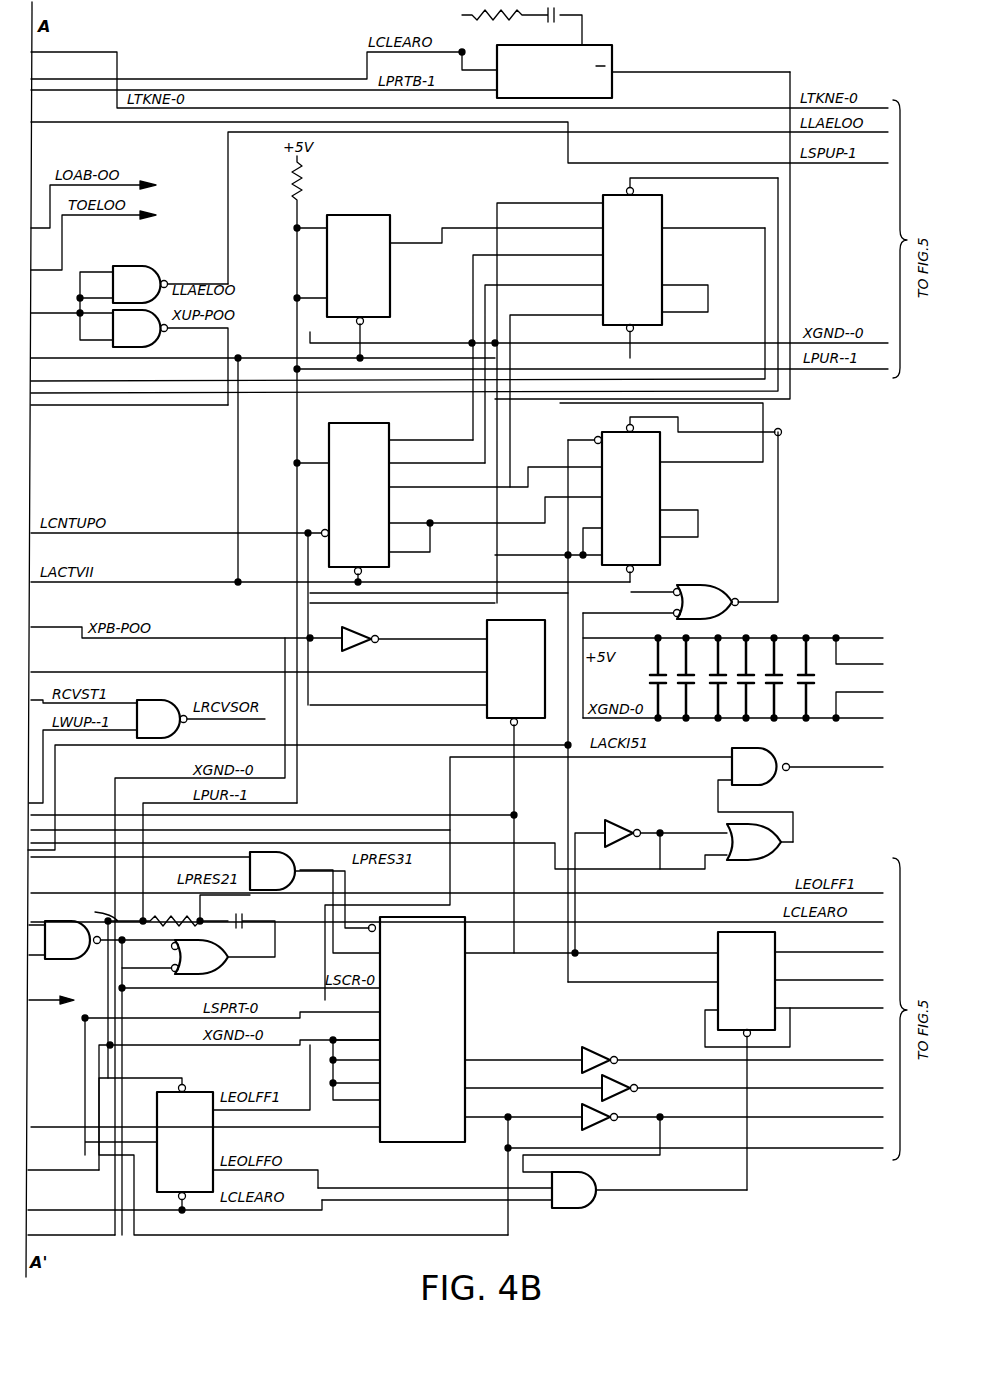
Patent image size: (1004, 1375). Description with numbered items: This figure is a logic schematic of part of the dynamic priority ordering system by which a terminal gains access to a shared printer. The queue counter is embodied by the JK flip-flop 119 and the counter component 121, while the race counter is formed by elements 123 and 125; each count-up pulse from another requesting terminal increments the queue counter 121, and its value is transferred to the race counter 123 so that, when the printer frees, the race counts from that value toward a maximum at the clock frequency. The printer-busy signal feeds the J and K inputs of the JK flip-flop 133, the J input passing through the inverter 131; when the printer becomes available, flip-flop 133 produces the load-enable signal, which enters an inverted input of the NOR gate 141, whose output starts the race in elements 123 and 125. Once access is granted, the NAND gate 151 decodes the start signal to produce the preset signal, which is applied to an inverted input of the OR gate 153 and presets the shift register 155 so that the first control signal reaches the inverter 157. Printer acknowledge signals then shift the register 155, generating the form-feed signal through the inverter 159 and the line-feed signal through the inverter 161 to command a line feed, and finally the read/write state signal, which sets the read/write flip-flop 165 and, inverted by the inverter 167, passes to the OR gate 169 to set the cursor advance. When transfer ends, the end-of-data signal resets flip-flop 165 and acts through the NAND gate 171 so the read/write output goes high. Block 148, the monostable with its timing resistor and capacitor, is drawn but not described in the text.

The JK flip-flop 119 is at (392, 298).
The queue counter component 121 is at (336, 422).
The race counter element 123 is at (662, 555).
The race counter element 125 is at (665, 316).
The inverter 131 is at (345, 628).
The JK flip-flop 133 is at (548, 622).
The NOR gate 141 is at (712, 586).
The monostable flip-flop 148 is at (612, 50).
The NAND gate 151 is at (68, 965).
The OR gate 153 is at (208, 948).
The shift register 155 is at (440, 1145).
The inverter 157 is at (600, 1048).
The inverter 159 is at (592, 1076).
The inverter 161 is at (608, 1124).
The read/write flip-flop 165 is at (745, 930).
The inverter 167 is at (620, 818).
The OR gate 169 is at (778, 844).
The NAND gate 171 is at (722, 766).